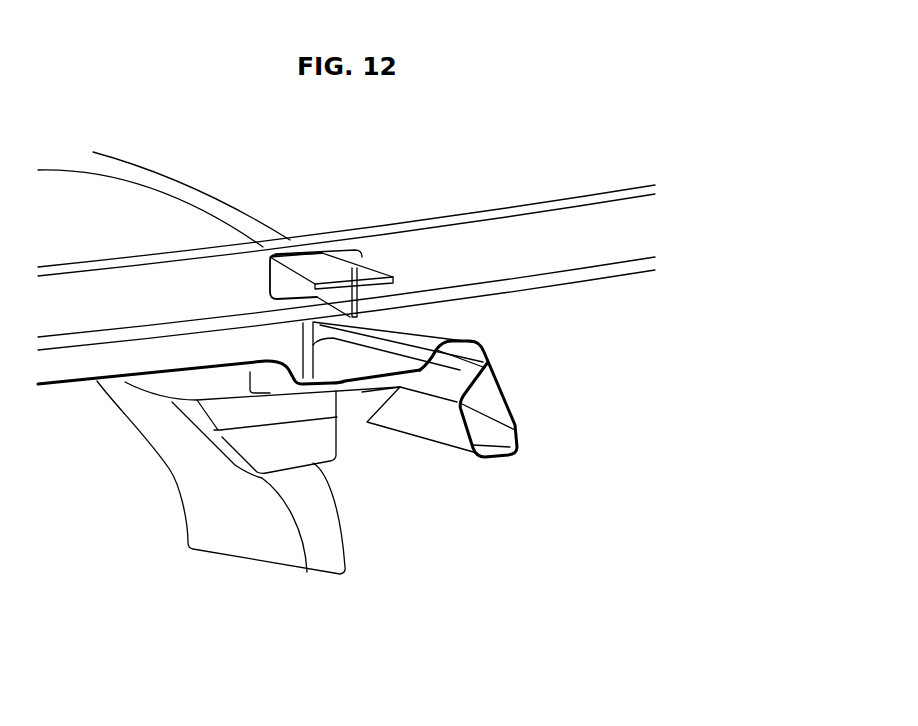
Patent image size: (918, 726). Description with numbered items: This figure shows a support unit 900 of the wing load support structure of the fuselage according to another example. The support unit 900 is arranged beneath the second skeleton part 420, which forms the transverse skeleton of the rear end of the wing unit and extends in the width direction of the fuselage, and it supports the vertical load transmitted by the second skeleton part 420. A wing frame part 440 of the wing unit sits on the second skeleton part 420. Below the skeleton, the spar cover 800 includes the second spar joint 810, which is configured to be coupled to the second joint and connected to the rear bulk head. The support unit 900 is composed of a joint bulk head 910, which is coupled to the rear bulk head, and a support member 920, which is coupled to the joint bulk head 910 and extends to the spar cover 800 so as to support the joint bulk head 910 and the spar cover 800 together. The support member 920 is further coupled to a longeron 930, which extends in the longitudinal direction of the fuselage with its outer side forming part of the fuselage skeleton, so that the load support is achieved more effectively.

The spar cover 800 is at (123, 200).
The second skeleton part 420 is at (493, 227).
The wing frame part 440 is at (308, 268).
The second spar joint 810 is at (328, 372).
The longeron 930 is at (488, 397).
The support unit 900 is at (248, 536).
The joint bulk head 910 is at (212, 542).
The support member 920 is at (282, 457).